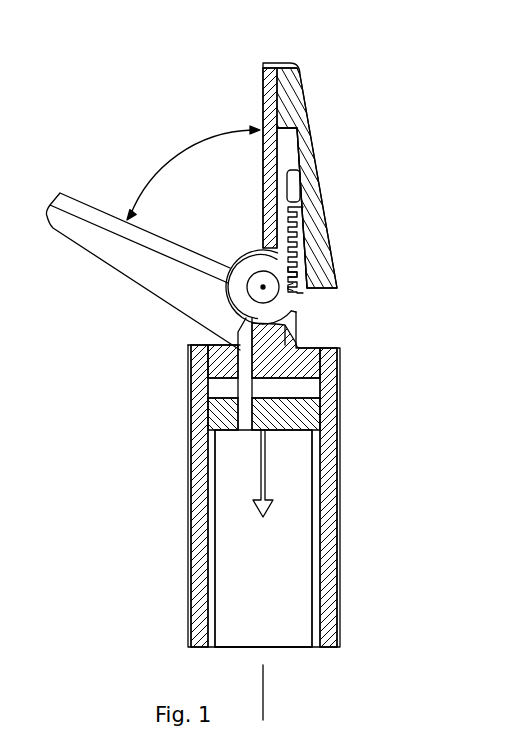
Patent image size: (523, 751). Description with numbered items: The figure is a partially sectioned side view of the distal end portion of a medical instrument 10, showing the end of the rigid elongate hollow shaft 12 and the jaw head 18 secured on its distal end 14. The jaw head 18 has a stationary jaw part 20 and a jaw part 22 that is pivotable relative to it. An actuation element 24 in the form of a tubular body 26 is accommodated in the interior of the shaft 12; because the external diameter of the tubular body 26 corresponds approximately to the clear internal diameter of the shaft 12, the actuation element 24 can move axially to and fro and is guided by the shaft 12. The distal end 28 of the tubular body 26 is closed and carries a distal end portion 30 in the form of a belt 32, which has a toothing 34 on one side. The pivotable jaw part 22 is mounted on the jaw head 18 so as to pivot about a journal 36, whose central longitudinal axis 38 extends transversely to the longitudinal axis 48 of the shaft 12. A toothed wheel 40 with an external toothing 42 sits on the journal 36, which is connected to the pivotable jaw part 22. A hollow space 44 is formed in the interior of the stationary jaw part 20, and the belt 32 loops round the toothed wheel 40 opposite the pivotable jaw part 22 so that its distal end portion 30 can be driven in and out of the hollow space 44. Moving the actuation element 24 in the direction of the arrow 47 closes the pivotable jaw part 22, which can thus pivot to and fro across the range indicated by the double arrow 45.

The medical instrument 10 is at (421, 116).
The jaw head 18 is at (162, 65).
The shaft 12 is at (338, 400).
The distal end 14 is at (300, 341).
The stationary jaw part 20 is at (290, 84).
The pivotable jaw part 22 is at (125, 268).
The actuation element 24 is at (215, 556).
The tubular body 26 is at (312, 650).
The distal end 28 is at (292, 424).
The distal end portion 30 is at (245, 387).
The belt 32 is at (300, 244).
The toothing 34 is at (283, 222).
The journal 36 is at (292, 276).
The central longitudinal axis 38 is at (263, 287).
The toothed wheel 40 is at (247, 252).
The external toothing 42 is at (297, 271).
The hollow space 44 is at (287, 150).
The double arrow 45 is at (172, 160).
The arrow 47 is at (261, 458).
The longitudinal axis 48 is at (263, 697).